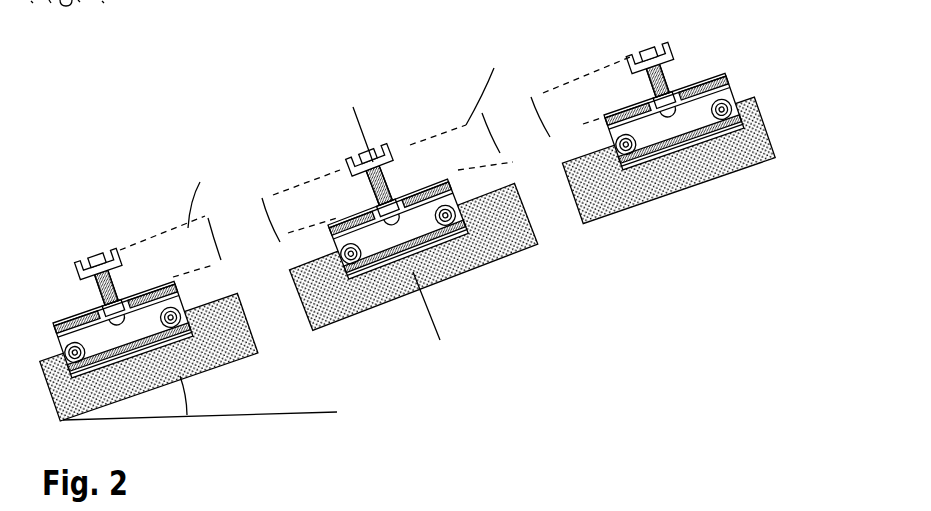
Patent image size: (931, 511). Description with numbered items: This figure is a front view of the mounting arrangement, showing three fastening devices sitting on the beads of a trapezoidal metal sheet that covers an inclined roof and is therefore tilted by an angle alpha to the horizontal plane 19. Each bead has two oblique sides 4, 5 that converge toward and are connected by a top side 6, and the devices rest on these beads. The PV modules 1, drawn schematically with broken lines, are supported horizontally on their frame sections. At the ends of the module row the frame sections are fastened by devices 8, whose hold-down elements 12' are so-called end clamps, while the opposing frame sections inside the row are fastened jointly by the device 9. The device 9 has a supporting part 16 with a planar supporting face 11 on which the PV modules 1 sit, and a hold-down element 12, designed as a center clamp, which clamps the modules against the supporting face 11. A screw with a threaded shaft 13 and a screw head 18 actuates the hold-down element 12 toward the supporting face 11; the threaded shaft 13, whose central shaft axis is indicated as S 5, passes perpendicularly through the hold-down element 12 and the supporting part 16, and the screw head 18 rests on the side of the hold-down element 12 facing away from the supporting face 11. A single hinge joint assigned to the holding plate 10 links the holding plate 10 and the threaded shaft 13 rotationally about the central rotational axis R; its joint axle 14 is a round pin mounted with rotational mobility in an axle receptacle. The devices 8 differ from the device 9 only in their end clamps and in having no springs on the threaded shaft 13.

The PV module 1 is at (311, 162).
The oblique side 4 is at (211, 339).
The oblique side 5 is at (362, 133).
The top side 6 is at (587, 157).
The device 8 is at (135, 212).
The device 9 is at (703, 15).
The holding plate 10 is at (152, 338).
The supporting face 11 is at (142, 290).
The hold-down element 12 is at (343, 158).
The hold-down element 12' is at (382, 158).
The threaded shaft 13 is at (88, 288).
The joint axle 14 is at (184, 295).
The supporting part 16 is at (78, 314).
The screw head 18 is at (97, 262).
The horizontal plane 19 is at (300, 413).
The central rotational axis R is at (493, 163).